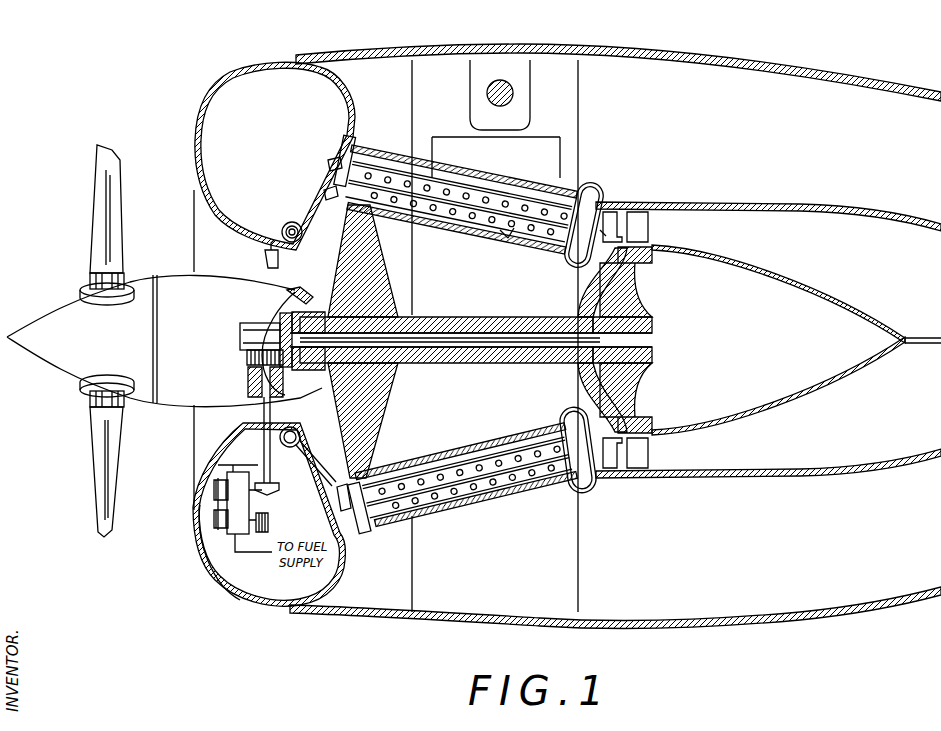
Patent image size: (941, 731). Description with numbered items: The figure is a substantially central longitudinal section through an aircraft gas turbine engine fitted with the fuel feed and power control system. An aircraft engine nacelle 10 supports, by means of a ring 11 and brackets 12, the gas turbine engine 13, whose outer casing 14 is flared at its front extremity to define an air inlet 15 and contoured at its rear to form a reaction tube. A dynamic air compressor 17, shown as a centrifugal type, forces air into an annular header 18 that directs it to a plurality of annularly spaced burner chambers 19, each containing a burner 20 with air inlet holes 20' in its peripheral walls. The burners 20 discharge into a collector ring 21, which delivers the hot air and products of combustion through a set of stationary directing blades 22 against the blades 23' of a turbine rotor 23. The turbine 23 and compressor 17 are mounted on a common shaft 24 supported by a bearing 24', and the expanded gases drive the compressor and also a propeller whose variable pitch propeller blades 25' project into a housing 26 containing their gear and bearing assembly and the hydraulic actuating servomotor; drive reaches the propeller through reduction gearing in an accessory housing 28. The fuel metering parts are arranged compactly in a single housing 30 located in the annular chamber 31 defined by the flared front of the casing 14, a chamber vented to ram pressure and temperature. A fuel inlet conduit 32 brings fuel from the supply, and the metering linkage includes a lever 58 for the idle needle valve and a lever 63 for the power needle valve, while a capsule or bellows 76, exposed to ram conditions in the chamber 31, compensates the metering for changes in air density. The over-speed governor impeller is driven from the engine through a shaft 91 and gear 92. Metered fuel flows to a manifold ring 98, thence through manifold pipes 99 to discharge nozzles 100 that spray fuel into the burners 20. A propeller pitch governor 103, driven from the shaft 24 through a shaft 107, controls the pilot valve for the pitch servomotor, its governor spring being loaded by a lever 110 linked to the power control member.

The aircraft engine nacelle 10 is at (634, 44).
The ring 11 is at (572, 60).
The brackets 12 is at (520, 92).
The gas turbine engine 13 is at (597, 176).
The outer casing 14 is at (765, 204).
The air inlet 15 is at (200, 216).
The dynamic air compressor 17 is at (340, 238).
The annular header 18 is at (362, 158).
The burner chambers 19 is at (506, 184).
The burner 20 is at (458, 213).
The air inlet holes 20' is at (507, 255).
The collector ring 21 is at (597, 196).
The stationary directing blades 22 is at (612, 224).
The turbine rotor 23 is at (628, 340).
The turbine blades 23' is at (665, 339).
The common shaft 24 is at (471, 318).
The bearing 24' is at (446, 358).
The variable pitch propeller blades 25' is at (72, 341).
The housing 26 is at (42, 330).
The accessory housing 28 is at (190, 397).
The fuel metering unit housing 30 is at (240, 505).
The annular chamber 31 is at (266, 592).
The fuel inlet conduit 32 is at (248, 555).
The lever 58 is at (215, 532).
The lever 63 is at (214, 486).
The capsule or bellows 76 is at (268, 523).
The shaft 91 is at (264, 408).
The gear 92 is at (246, 347).
The manifold ring 98 is at (285, 230).
The manifold pipes 99 is at (322, 196).
The discharge nozzles 100 is at (334, 162).
The propeller pitch governor 103 is at (262, 262).
The shaft 107 is at (282, 302).
The lever 110 is at (293, 275).